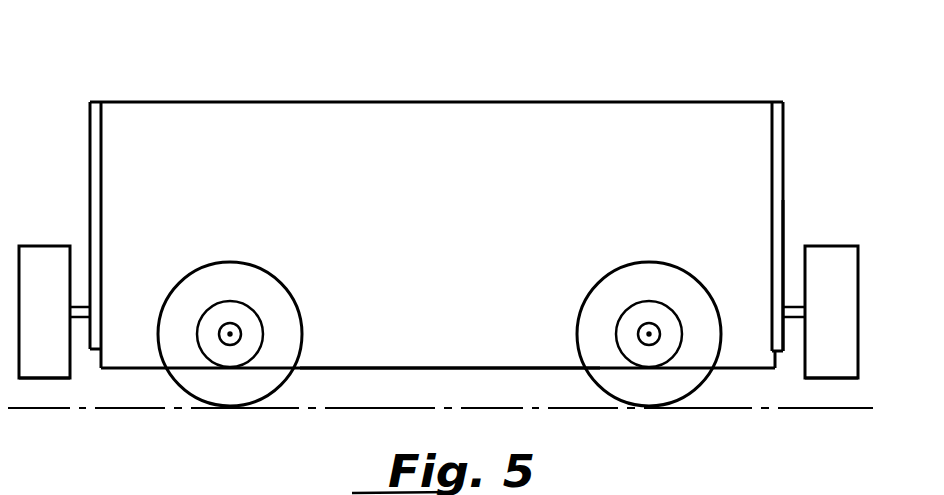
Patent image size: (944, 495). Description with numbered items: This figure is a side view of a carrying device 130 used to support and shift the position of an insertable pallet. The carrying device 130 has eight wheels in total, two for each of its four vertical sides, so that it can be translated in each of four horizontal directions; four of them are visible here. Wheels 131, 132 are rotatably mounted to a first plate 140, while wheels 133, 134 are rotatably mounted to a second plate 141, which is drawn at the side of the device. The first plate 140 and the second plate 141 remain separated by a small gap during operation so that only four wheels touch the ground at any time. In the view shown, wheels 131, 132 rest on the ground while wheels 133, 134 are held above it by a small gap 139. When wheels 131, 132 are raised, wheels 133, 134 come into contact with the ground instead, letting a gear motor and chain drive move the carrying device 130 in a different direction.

The carrying device 130 is at (549, 101).
The wheel 131 is at (207, 383).
The wheel 132 is at (633, 383).
The wheel 133 is at (40, 272).
The wheel 134 is at (825, 264).
The small gap 139 is at (48, 387).
The first plate 140 is at (522, 368).
The second plate 141 is at (785, 370).